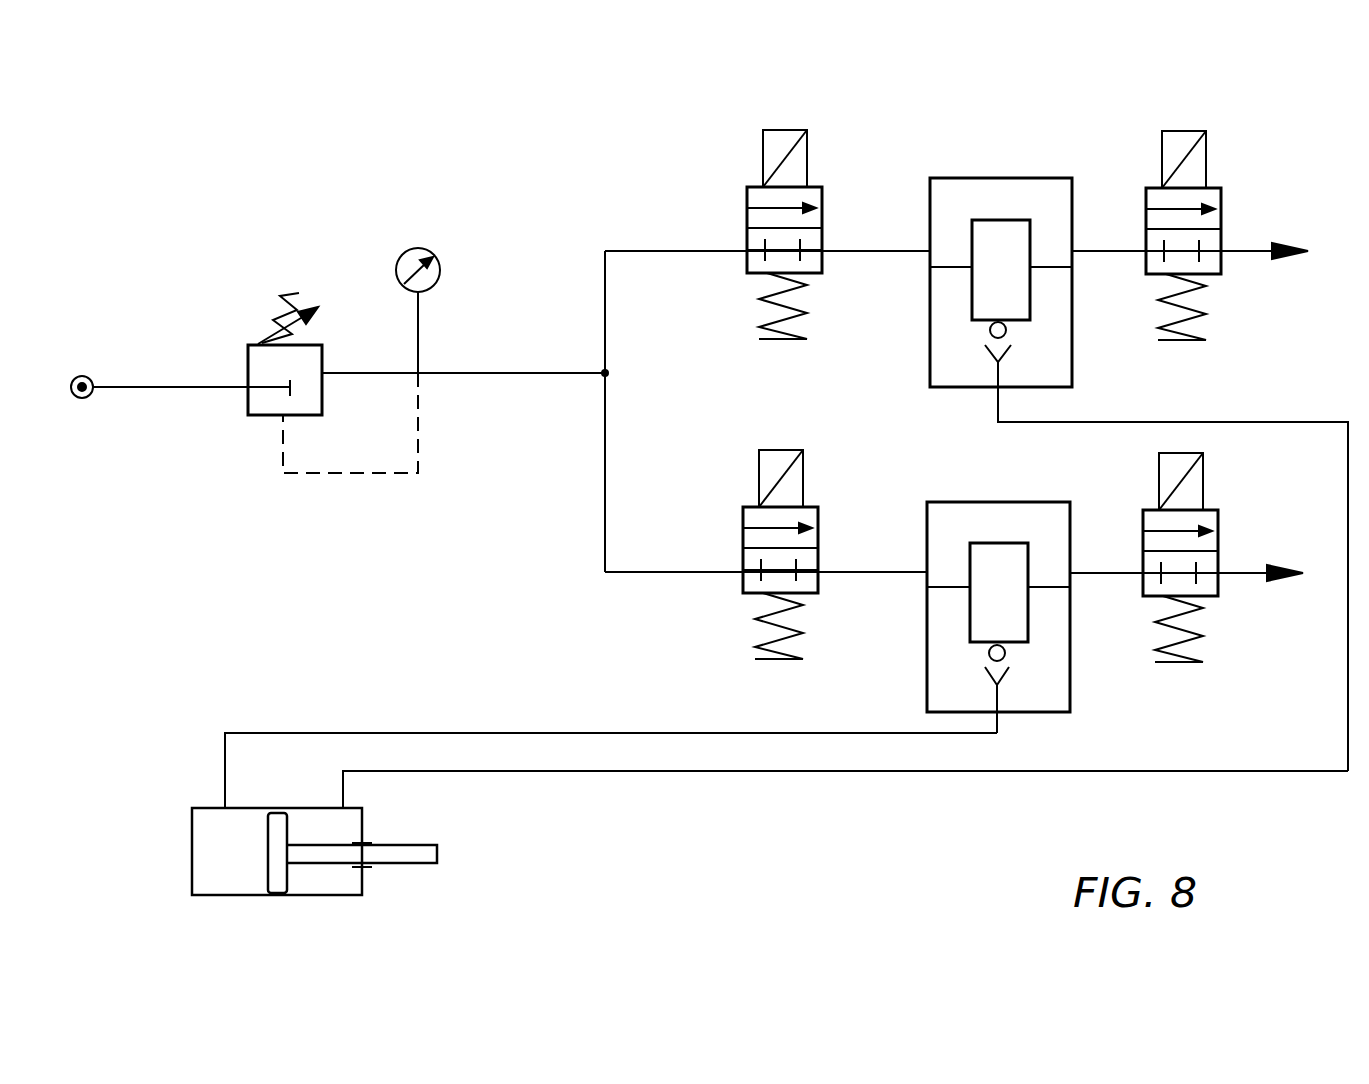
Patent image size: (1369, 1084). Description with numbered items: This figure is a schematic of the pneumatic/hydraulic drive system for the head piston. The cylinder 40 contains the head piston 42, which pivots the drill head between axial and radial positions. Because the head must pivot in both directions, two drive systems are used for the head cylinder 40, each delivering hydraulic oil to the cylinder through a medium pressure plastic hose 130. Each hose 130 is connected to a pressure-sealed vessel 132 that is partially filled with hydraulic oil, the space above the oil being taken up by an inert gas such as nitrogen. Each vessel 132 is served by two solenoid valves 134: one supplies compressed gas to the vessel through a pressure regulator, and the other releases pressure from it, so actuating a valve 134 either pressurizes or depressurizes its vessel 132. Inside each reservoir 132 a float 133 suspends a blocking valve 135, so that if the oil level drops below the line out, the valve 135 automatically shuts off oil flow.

The cylinder 40 is at (210, 838).
The head piston 42 is at (400, 850).
The plastic hoses 130 is at (537, 733).
The pressure-sealed vessel 132 is at (928, 312).
The float 133 is at (1016, 275).
The solenoid valves 134 is at (747, 197).
The blocking valve 135 is at (1008, 342).